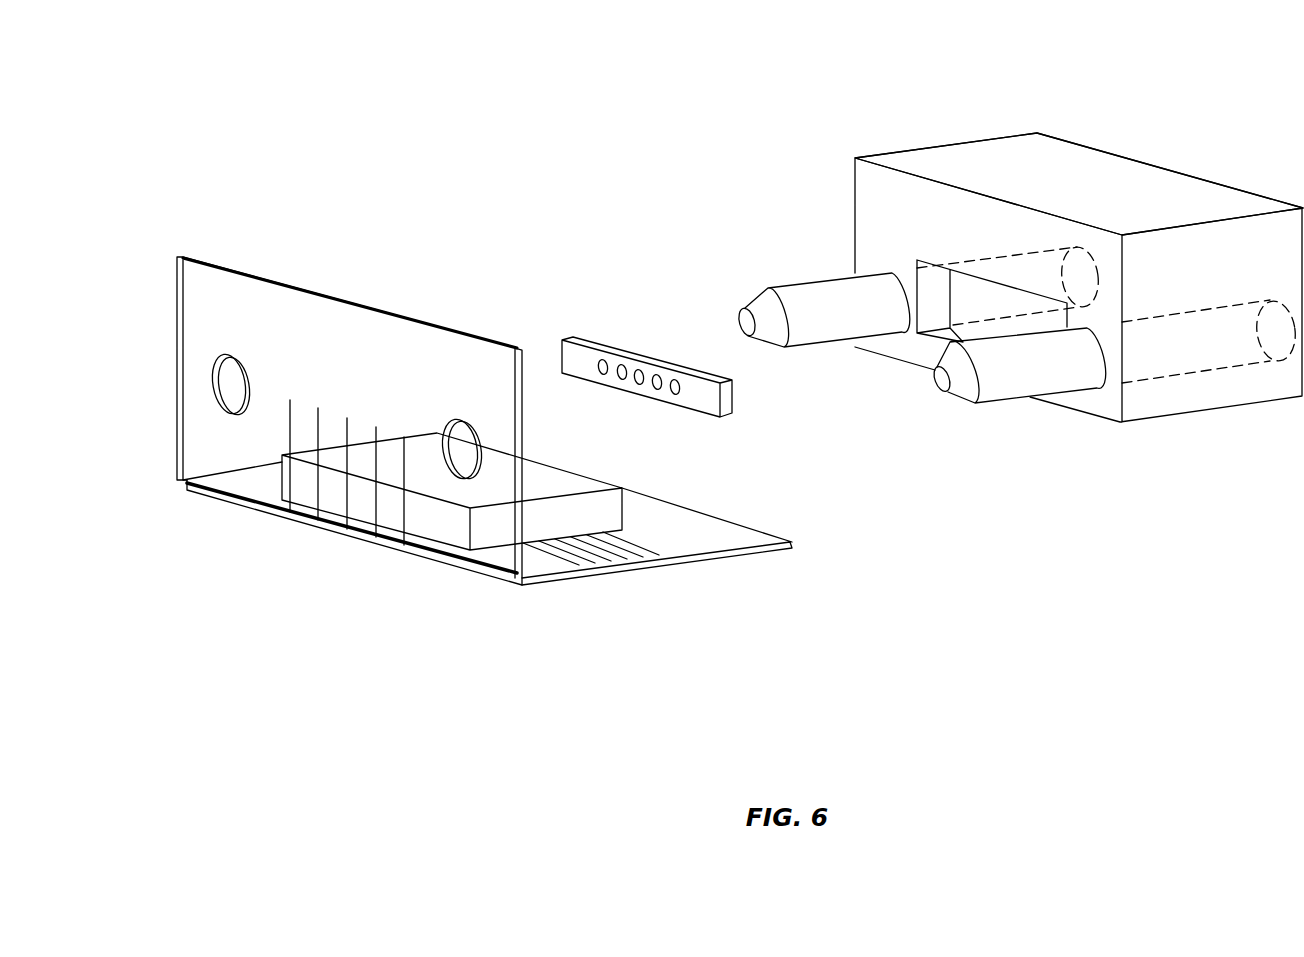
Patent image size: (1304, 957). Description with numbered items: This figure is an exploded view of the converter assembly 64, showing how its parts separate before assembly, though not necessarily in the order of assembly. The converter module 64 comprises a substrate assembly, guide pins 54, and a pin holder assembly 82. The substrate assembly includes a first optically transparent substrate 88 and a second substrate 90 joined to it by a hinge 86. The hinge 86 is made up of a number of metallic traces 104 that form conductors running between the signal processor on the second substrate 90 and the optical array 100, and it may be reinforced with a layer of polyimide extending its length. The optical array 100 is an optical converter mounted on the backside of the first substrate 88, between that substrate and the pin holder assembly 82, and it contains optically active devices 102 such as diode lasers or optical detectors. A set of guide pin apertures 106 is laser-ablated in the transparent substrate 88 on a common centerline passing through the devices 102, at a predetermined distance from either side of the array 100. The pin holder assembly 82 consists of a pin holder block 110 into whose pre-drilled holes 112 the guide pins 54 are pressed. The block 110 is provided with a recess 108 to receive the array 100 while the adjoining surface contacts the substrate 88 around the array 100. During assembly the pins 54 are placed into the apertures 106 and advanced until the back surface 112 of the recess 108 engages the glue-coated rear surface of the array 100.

The converter assembly 64 is at (846, 632).
The pin holder assembly 82 is at (1095, 132).
The hinge 86 is at (1062, 500).
The first optically transparent substrate 88 is at (205, 262).
The second substrate 90 is at (637, 571).
The optical array 100 is at (653, 358).
The optically active devices 102 is at (588, 364).
The metallic traces 104 is at (290, 430).
The guide pin apertures 106 is at (232, 355).
The recess 108 is at (973, 300).
The pin holder block 110 is at (1228, 186).
The pre-drilled holes 112 is at (1027, 253).
The guide pins 54 is at (792, 277).